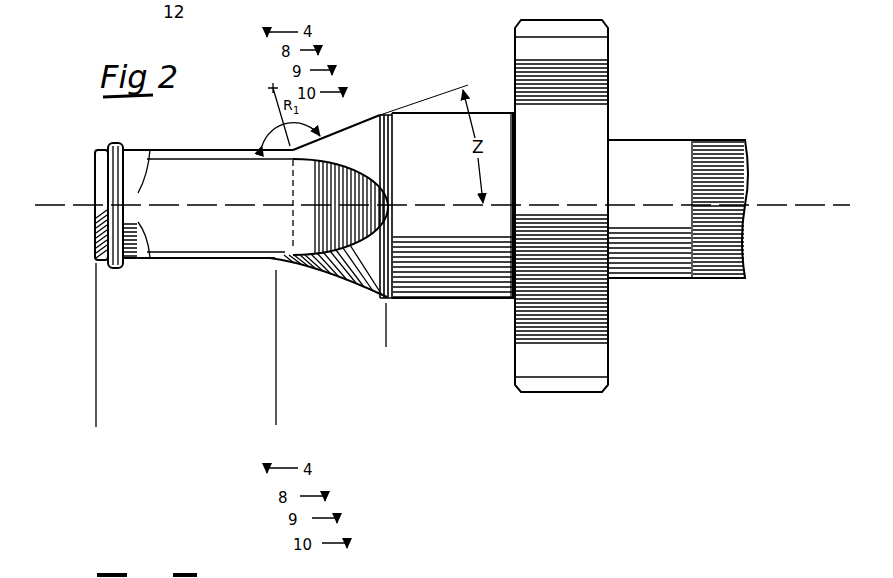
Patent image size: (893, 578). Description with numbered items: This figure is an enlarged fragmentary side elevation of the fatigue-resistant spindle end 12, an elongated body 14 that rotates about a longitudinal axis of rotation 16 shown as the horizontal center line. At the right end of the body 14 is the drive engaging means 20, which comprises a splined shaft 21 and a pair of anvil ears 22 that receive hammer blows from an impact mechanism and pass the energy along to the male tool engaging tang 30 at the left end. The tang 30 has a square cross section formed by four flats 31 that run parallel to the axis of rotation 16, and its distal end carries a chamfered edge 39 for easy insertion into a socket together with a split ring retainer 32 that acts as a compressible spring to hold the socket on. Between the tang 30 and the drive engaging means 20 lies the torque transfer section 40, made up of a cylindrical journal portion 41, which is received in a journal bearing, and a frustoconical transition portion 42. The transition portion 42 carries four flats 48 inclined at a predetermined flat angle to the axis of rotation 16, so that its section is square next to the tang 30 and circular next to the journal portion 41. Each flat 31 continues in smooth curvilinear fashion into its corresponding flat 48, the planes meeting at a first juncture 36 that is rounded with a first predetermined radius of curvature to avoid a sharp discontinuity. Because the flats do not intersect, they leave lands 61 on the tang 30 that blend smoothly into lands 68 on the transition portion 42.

The spindle end 12 is at (77, 233).
The elongated body 14 is at (487, 112).
The longitudinal axis of rotation 16 is at (50, 204).
The drive engaging means 20 is at (515, 393).
The splined shaft 21 is at (718, 140).
The anvil ears 22 is at (605, 58).
The male tool engaging tang 30 is at (276, 408).
The flats 31 is at (207, 150).
The split ring retainer 32 is at (116, 144).
The first juncture 36 is at (293, 193).
The chamfered edge 39 is at (97, 149).
The torque transfer section 40 is at (515, 408).
The cylindrical journal portion 41 is at (513, 325).
The transition portion 42 is at (386, 325).
The flats 48 is at (363, 120).
The lands 61 is at (228, 262).
The lands 68 is at (350, 267).